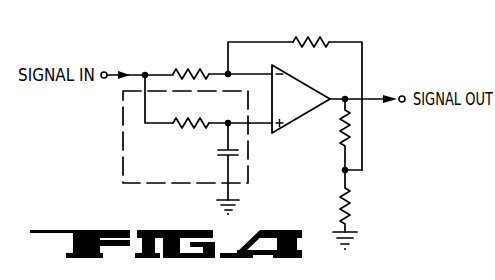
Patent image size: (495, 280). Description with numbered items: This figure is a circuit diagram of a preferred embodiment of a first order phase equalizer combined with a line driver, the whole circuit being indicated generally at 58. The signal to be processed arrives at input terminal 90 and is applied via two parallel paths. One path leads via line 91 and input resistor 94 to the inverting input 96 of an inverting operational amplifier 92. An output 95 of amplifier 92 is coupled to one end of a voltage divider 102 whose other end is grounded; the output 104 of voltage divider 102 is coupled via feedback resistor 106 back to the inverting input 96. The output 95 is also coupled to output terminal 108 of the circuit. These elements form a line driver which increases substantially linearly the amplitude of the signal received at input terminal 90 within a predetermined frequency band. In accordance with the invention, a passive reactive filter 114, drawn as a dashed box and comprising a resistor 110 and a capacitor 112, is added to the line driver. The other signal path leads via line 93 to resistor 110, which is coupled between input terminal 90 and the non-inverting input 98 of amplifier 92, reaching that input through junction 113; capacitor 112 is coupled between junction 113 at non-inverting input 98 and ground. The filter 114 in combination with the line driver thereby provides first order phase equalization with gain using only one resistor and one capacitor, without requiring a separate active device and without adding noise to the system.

The amplifier circuit 58 is at (182, 28).
The input terminal 90 is at (105, 70).
The line 91 is at (158, 72).
The inverting operational amplifier 92 is at (297, 83).
The line 93 is at (156, 125).
The input resistor 94 is at (191, 65).
The output 95 is at (346, 95).
The inverting input 96 is at (268, 72).
The non-inverting input 98 is at (267, 126).
The voltage divider 102 is at (336, 113).
The output of voltage divider 104 is at (348, 172).
The feedback resistor 106 is at (311, 33).
The output terminal 108 is at (402, 95).
The resistor 110 is at (191, 114).
The capacitor 112 is at (218, 169).
The junction 113 is at (226, 125).
The passive reactive filter 114 is at (120, 178).